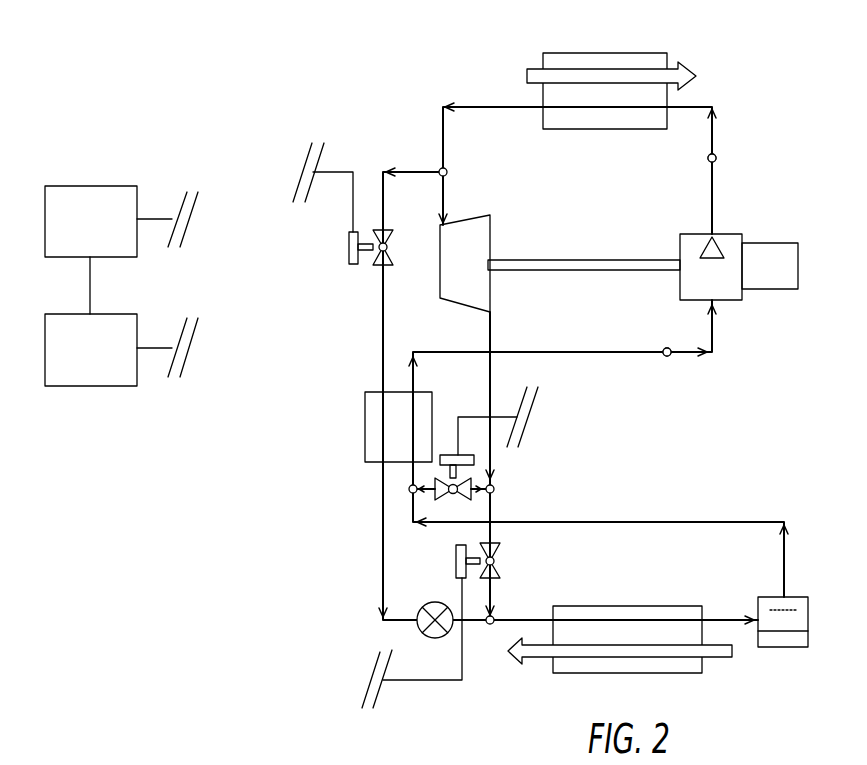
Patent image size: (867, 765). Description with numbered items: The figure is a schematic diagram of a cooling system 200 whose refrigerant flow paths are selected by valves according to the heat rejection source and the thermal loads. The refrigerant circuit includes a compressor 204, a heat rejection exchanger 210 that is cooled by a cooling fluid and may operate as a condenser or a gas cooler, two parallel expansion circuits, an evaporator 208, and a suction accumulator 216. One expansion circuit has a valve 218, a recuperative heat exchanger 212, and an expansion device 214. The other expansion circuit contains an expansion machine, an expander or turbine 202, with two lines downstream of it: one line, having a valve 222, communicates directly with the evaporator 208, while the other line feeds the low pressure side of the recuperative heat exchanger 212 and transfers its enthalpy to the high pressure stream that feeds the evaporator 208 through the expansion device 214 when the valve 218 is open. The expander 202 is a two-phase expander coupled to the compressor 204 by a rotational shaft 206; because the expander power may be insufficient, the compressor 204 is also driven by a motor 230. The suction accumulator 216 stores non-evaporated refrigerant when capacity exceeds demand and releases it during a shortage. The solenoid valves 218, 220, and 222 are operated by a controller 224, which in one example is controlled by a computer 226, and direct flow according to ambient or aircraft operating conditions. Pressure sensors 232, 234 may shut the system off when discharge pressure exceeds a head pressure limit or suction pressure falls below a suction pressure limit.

The cooling system 200 is at (771, 68).
The expansion machine (expander or turbine) 202 is at (492, 227).
The compressor 204 is at (727, 232).
The rotational shaft 206 is at (592, 258).
The evaporator 208 is at (640, 603).
The heat rejection exchanger 210 is at (667, 62).
The recuperative heat exchanger 212 is at (365, 408).
The expansion device 214 is at (418, 627).
The suction accumulator 216 is at (798, 597).
The valve 218 is at (352, 267).
The valve 220 is at (442, 463).
The valve 222 is at (455, 558).
The controller 224 is at (125, 387).
The computer 226 is at (122, 184).
The motor 230 is at (780, 292).
The pressure sensor 232 is at (716, 157).
The pressure sensor 234 is at (667, 356).